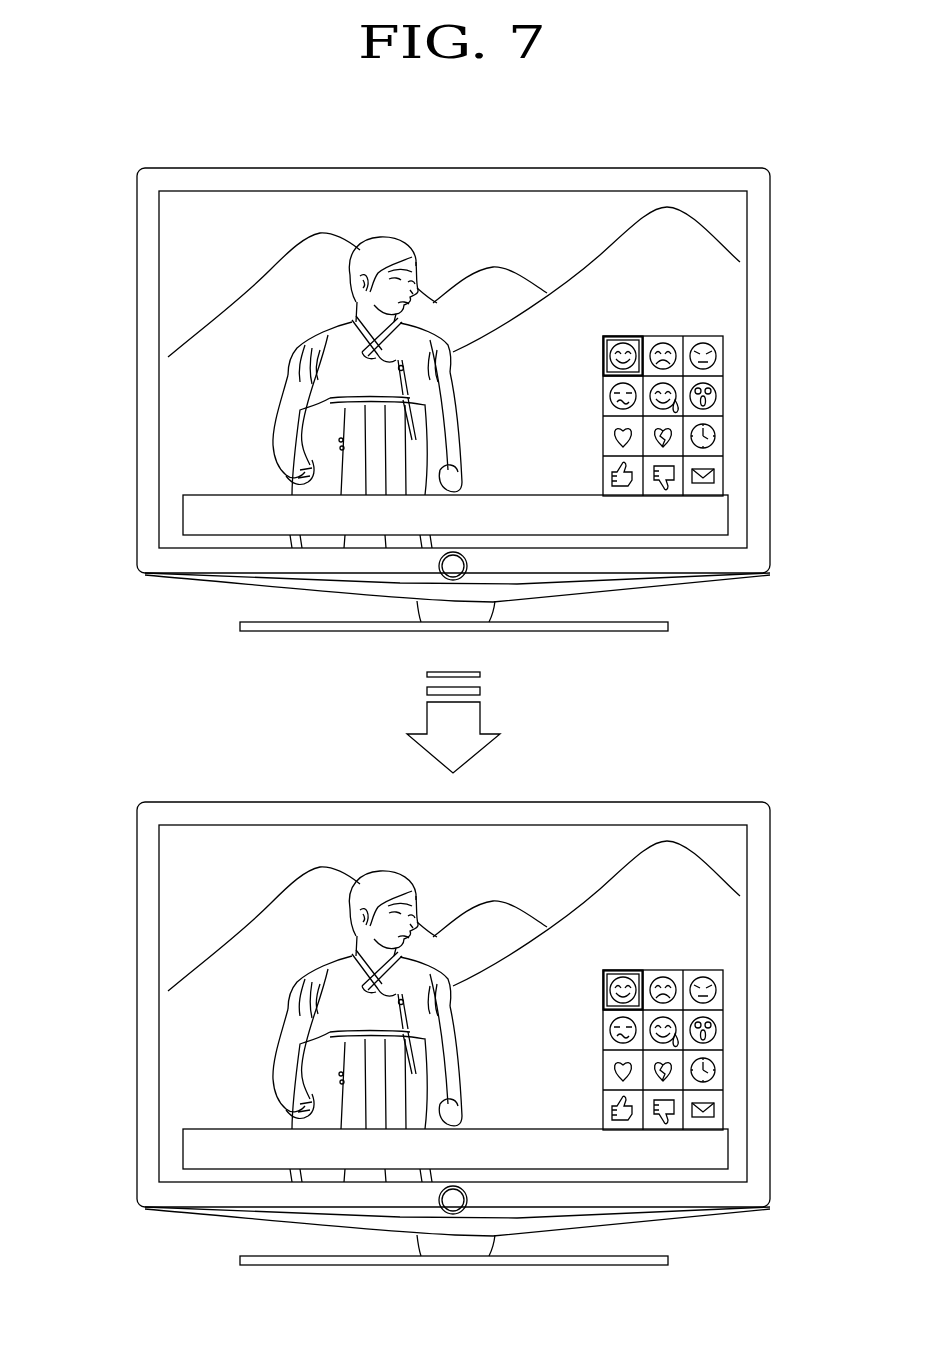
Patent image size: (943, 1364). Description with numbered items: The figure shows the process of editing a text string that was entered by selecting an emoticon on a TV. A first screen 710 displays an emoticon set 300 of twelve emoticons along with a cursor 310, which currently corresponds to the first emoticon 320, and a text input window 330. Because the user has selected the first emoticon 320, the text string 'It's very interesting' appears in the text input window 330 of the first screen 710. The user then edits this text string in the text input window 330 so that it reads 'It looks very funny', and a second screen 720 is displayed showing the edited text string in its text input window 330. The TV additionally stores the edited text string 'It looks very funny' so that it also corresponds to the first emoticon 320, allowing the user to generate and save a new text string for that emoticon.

The first screen 710 is at (228, 150).
The second screen 720 is at (228, 785).
The emoticon set 300 is at (716, 733).
The cursor 310 is at (632, 338).
The first emoticon 320 is at (614, 340).
The text input window 330 is at (183, 495).